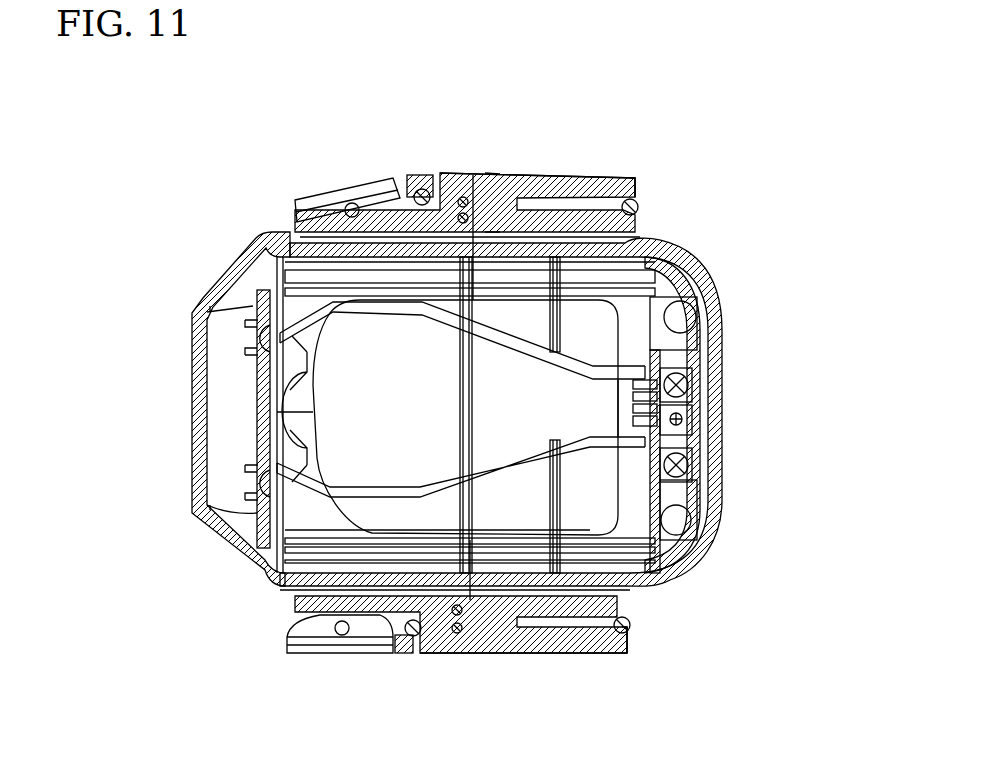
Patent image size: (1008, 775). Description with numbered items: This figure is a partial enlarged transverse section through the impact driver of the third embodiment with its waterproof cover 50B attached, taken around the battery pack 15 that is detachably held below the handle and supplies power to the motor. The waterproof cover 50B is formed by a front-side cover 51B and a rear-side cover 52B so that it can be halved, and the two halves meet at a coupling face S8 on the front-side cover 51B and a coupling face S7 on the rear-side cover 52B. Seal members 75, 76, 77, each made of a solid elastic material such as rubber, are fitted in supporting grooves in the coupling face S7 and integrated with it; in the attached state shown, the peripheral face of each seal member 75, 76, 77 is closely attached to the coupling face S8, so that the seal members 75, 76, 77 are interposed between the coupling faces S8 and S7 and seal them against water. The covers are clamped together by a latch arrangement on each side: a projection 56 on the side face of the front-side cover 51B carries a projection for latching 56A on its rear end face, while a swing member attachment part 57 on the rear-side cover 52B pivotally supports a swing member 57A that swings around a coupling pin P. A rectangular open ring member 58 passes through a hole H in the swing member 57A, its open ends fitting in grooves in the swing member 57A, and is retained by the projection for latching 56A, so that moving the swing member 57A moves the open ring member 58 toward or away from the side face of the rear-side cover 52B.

The battery pack 15 is at (370, 385).
The waterproof cover 50B is at (455, 411).
The front-side cover 51B is at (800, 482).
The rear-side cover 52B is at (168, 488).
The projection 56 is at (598, 180).
The projection for latching 56A is at (640, 187).
The swing member attachment part 57 is at (415, 178).
The swing member 57A is at (325, 182).
The open ring member 58 is at (640, 207).
The seal member 75 is at (458, 655).
The seal member 76 is at (463, 196).
The seal member 77 is at (519, 426).
The hole H is at (300, 218).
The coupling pin P is at (423, 189).
The coupling face S8 is at (514, 151).
The coupling face S7 is at (490, 175).